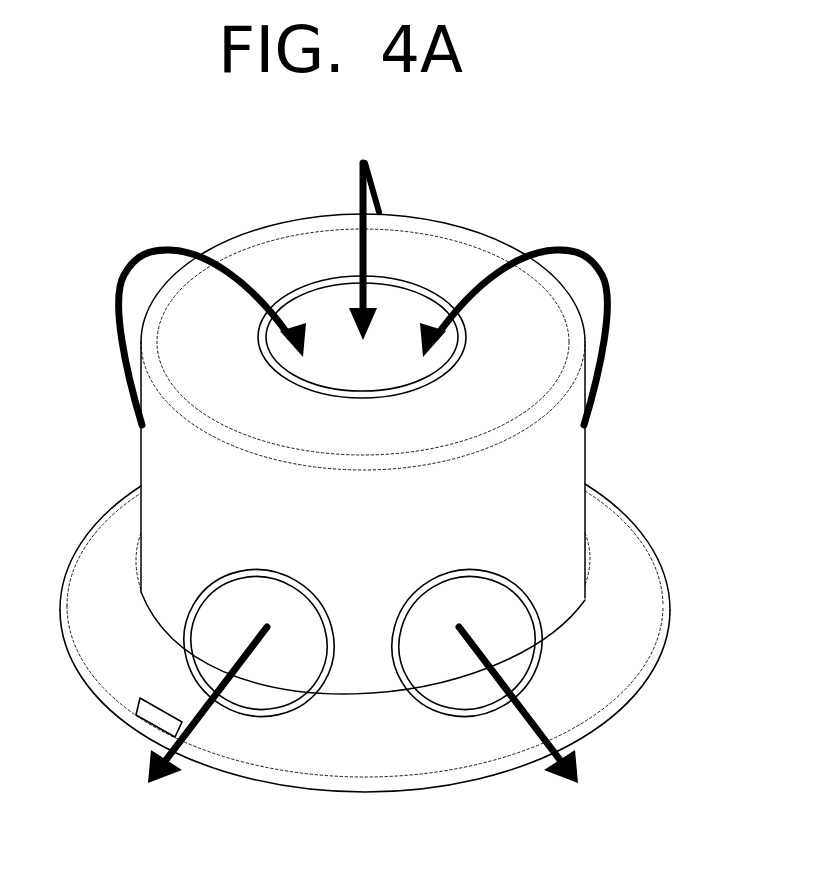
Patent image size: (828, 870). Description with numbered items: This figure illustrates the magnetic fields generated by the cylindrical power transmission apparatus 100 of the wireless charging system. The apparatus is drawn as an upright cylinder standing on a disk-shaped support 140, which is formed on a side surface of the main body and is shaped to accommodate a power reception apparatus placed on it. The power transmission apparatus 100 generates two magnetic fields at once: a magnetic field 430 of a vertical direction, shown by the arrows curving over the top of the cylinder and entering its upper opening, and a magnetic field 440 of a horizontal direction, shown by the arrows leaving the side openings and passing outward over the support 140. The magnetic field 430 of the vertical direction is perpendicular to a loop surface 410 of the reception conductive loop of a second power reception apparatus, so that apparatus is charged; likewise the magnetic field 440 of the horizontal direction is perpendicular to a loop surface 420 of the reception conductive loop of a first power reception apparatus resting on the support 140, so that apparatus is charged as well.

The power transmission apparatus 100 is at (455, 229).
The support 140 is at (593, 686).
The loop surface 410 is at (313, 285).
The loop surface 420 is at (198, 662).
The magnetic field of a vertical direction 430 is at (162, 249).
The magnetic field of a horizontal direction 440 is at (152, 774).